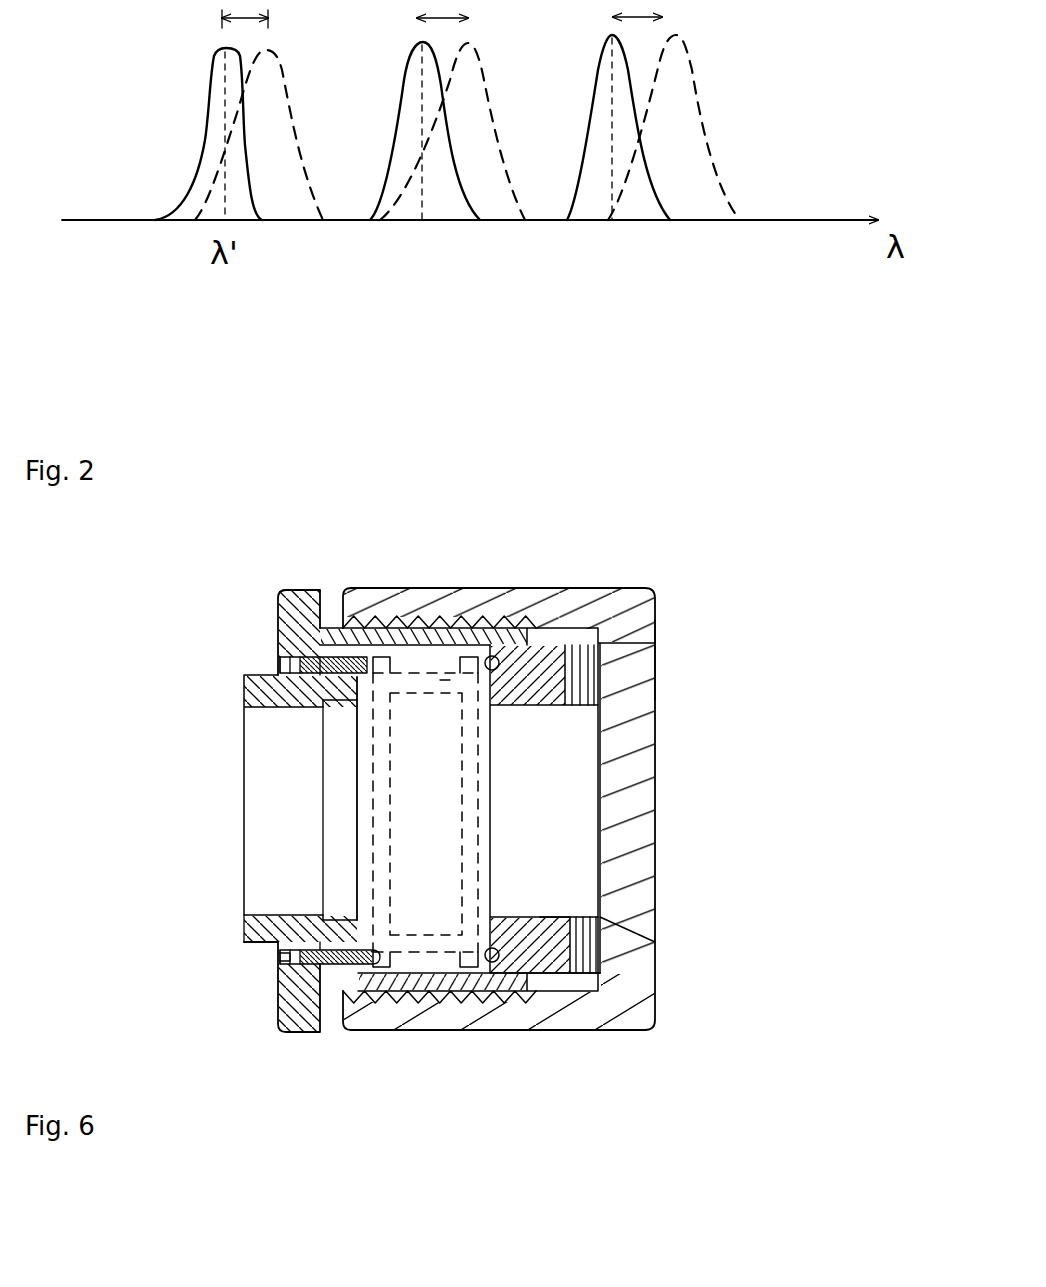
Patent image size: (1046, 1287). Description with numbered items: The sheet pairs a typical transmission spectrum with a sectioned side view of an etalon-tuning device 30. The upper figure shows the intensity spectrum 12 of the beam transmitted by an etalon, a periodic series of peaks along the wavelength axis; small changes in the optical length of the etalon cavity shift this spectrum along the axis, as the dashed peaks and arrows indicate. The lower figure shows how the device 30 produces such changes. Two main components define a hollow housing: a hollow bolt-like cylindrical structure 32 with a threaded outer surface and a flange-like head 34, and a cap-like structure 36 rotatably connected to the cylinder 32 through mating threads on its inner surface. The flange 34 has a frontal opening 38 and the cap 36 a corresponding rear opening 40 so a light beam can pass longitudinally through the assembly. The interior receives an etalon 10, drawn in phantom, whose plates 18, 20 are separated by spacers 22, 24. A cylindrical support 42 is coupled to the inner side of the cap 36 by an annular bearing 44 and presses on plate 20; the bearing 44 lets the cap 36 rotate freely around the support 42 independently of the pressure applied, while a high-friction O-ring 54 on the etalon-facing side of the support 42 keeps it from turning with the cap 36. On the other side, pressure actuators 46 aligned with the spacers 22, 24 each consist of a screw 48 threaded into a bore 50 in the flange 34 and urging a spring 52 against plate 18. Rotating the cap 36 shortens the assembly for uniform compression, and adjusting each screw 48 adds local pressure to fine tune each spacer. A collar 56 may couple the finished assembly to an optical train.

In FIG. 6, the etalon 10 is at (477, 1030).
In FIG. 2, the intensity spectrum 12 is at (203, 134).
In FIG. 6, the plate 18 is at (385, 717).
In FIG. 6, the plate 20 is at (470, 782).
In FIG. 6, the spacer 22 is at (424, 683).
In FIG. 6, the spacer 24 is at (425, 1030).
In FIG. 6, the etalon-tuning device 30 is at (700, 500).
In FIG. 6, the cylindrical structure 32 is at (290, 600).
In FIG. 6, the flange-like head 34 is at (288, 590).
In FIG. 6, the cap-like structure 36 is at (404, 585).
In FIG. 6, the frontal opening 38 is at (337, 723).
In FIG. 6, the rear opening 40 is at (640, 720).
In FIG. 6, the cylindrical support 42 is at (540, 925).
In FIG. 6, the annular bearing 44 is at (585, 680).
In FIG. 6, the pressure actuator 46 is at (334, 652).
In FIG. 6, the screw 48 is at (293, 665).
In FIG. 6, the bore 50 is at (280, 982).
In FIG. 6, the spring 52 is at (315, 672).
In FIG. 6, the O-ring 54 is at (502, 654).
In FIG. 6, the collar 56 is at (252, 930).